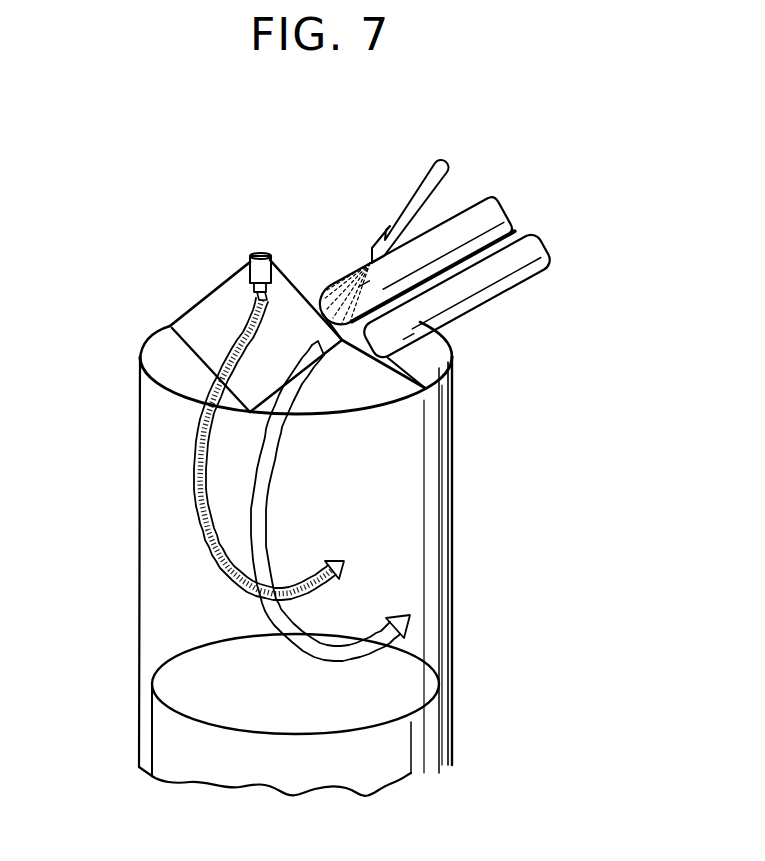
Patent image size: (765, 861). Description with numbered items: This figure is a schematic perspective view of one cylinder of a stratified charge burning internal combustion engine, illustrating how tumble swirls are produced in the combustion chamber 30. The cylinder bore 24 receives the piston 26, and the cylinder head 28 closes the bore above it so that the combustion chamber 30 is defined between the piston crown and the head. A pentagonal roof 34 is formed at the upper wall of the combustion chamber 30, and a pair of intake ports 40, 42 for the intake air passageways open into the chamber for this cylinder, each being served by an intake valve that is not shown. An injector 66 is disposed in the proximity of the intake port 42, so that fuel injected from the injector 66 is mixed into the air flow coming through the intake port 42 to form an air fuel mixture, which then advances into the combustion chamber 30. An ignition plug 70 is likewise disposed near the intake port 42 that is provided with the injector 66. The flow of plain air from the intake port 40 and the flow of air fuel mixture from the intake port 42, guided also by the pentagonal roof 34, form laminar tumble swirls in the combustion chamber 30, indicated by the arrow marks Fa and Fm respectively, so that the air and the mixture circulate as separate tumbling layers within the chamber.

The cylinder bore 24 is at (448, 593).
The piston 26 is at (422, 743).
The cylinder head 28 is at (435, 362).
The combustion chamber 30 is at (437, 495).
The pentagonal roof 34 is at (205, 318).
The intake port 40 is at (483, 293).
The intake port 42 is at (493, 207).
The injector 66 is at (410, 200).
The ignition plug 70 is at (253, 268).
The tumble swirl of air fuel mixture Fm is at (195, 478).
The tumble swirl of air Fa is at (263, 488).